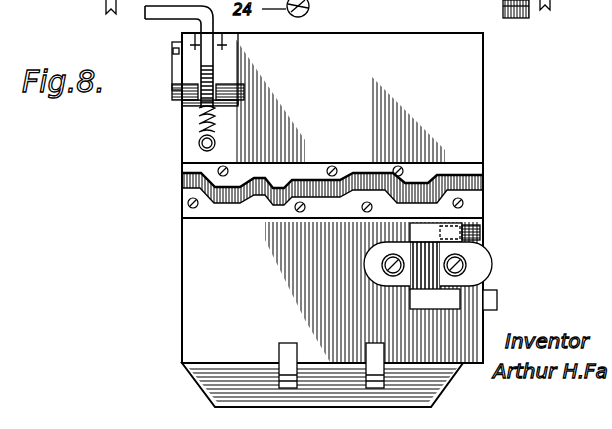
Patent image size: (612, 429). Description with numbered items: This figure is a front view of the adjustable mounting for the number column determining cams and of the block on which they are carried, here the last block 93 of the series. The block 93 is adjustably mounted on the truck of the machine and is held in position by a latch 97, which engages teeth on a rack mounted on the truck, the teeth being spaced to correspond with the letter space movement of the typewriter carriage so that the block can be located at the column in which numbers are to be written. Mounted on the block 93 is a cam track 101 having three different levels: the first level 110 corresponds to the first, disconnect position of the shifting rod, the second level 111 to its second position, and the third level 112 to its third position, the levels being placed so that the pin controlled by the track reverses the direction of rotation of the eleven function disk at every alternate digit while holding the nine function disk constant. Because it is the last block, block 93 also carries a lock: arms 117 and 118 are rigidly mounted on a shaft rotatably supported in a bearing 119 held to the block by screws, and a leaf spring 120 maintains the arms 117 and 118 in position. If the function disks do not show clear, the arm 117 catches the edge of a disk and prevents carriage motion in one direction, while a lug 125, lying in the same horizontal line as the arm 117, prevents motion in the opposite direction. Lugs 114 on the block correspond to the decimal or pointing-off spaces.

The block 93 is at (470, 85).
The latch 97 is at (161, 13).
The cam track 101 is at (185, 180).
The first level 110 is at (456, 175).
The second level 111 is at (410, 180).
The third level 112 is at (405, 205).
The arm 118 is at (432, 228).
The leaf spring 120 is at (483, 233).
The bearing 119 is at (467, 268).
The arm 117 is at (452, 302).
The lug 125 is at (500, 296).
The lug 114 is at (375, 358).